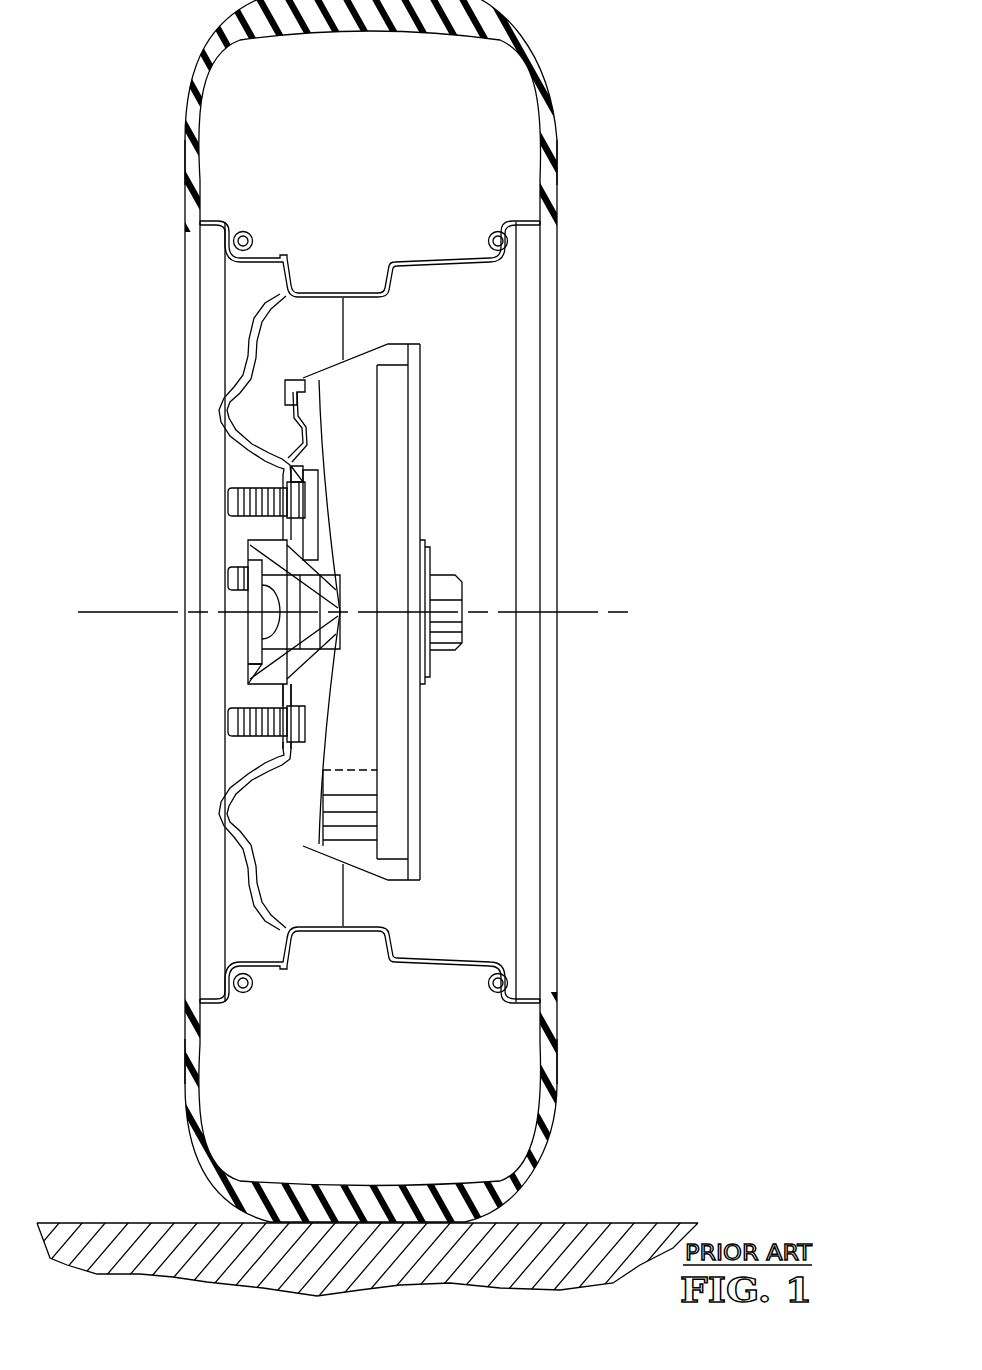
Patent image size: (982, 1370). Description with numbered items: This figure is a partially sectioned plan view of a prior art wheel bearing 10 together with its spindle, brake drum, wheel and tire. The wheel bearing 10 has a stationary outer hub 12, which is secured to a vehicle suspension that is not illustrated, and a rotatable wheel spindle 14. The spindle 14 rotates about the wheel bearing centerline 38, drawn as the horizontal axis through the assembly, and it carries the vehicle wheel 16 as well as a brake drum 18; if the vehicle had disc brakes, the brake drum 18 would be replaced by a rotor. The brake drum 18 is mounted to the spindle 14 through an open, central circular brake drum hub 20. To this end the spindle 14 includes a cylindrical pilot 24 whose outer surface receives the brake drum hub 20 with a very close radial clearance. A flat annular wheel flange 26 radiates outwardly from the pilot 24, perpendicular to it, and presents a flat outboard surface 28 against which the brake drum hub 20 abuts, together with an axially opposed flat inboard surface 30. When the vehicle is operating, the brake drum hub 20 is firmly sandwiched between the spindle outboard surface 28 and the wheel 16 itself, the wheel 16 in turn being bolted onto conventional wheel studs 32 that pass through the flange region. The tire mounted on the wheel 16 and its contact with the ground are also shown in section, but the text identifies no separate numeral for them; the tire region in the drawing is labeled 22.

The wheel bearing 10 is at (236, 626).
The stationary outer hub 12 is at (423, 563).
The wheel spindle 14 is at (245, 550).
The vehicle wheel 16 is at (258, 320).
The brake drum 18 is at (298, 378).
The brake drum hub 20 is at (283, 445).
The tire 22 is at (548, 90).
The cylindrical pilot 24 is at (270, 694).
The wheel flange 26 is at (310, 754).
The outboard surface 28 is at (287, 700).
The inboard surface 30 is at (303, 478).
The wheel studs 32 is at (232, 500).
The wheel bearing centerline 38 is at (597, 613).